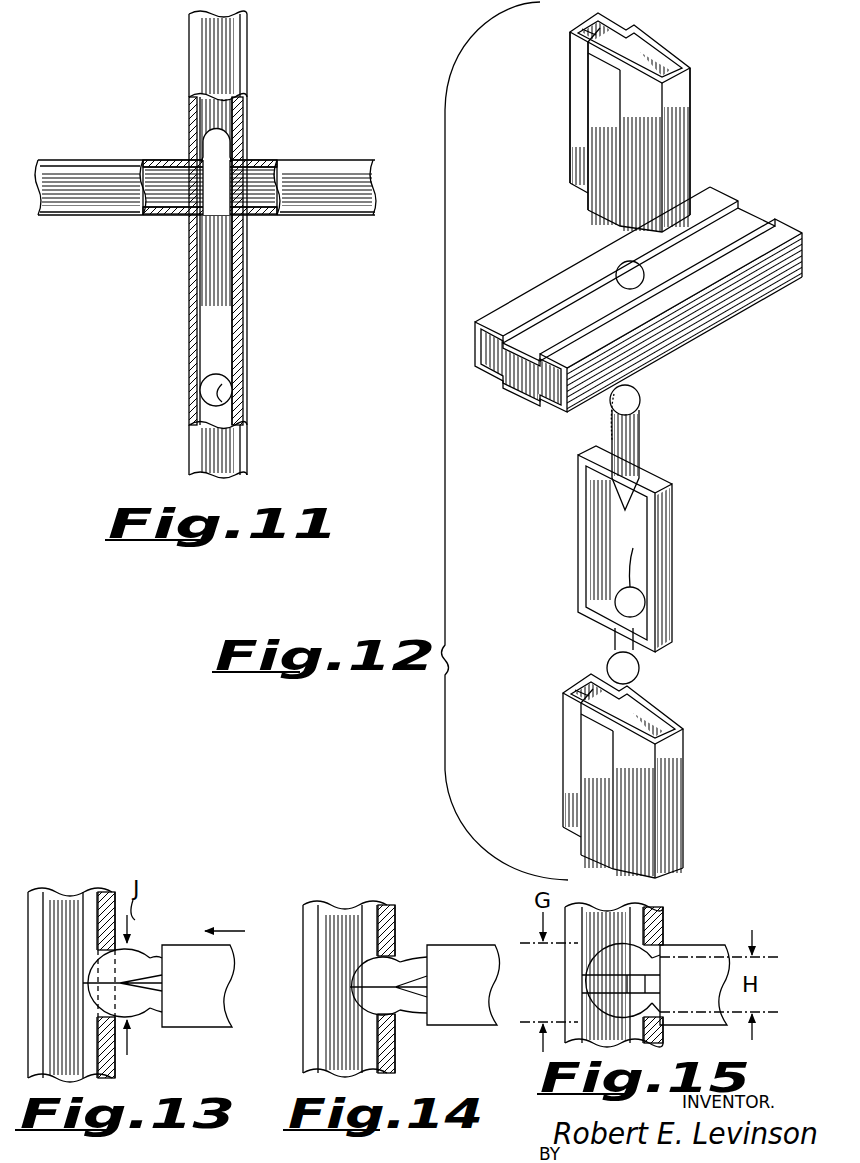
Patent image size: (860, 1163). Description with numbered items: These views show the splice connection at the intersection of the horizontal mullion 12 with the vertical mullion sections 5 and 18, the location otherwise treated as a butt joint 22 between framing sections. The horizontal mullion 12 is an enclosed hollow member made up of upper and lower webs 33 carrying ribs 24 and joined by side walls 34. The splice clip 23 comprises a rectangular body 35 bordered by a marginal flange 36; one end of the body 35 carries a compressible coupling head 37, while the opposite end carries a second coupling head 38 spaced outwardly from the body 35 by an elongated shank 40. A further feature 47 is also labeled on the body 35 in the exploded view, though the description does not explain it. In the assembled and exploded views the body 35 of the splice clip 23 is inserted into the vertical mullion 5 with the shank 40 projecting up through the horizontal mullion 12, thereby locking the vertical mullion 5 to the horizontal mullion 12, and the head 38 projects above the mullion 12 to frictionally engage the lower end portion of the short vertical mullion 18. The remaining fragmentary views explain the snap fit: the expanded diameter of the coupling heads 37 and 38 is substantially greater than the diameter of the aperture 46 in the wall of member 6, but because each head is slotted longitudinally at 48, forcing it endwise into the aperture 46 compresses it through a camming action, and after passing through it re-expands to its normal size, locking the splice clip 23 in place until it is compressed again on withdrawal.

In FIG. 11, the vertical mullion 5 is at (248, 374).
In FIG. 12, the vertical mullion 5 is at (680, 823).
In FIG. 13, the vertical mullion 6 is at (46, 892).
In FIG. 14, the vertical mullion 6 is at (338, 904).
In FIG. 15, the vertical mullion 6 is at (616, 917).
In FIG. 11, the horizontal mullion 12 is at (75, 166).
In FIG. 12, the horizontal mullion 12 is at (736, 306).
In FIG. 11, the short vertical mullion 18 is at (250, 40).
In FIG. 12, the short vertical mullion 18 is at (684, 118).
In FIG. 11, the butt joint 22 is at (191, 222).
In FIG. 11, the splice clip 23 is at (214, 298).
In FIG. 12, the splice clip 23 is at (672, 557).
In FIG. 13, the splice clip 23 is at (212, 970).
In FIG. 14, the splice clip 23 is at (476, 946).
In FIG. 15, the splice clip 23 is at (720, 944).
In FIG. 11, the rib 24 is at (247, 68).
In FIG. 12, the rib 24 is at (658, 35).
In FIG. 11, the web 33 is at (312, 215).
In FIG. 12, the web 33 is at (577, 58).
In FIG. 11, the side wall 34 is at (104, 183).
In FIG. 12, the side wall 34 is at (582, 28).
In FIG. 12, the rectangular body 35 is at (604, 500).
In FIG. 11, the marginal flange 36 is at (210, 322).
In FIG. 12, the marginal flange 36 is at (653, 589).
In FIG. 11, the compressible coupling head 37 is at (225, 394).
In FIG. 12, the compressible coupling head 37 is at (632, 670).
In FIG. 13, the compressible coupling head 37 is at (130, 968).
In FIG. 14, the compressible coupling head 37 is at (390, 968).
In FIG. 15, the compressible coupling head 37 is at (607, 960).
In FIG. 11, the second coupling head 38 is at (218, 143).
In FIG. 12, the second coupling head 38 is at (633, 404).
In FIG. 11, the elongated shank 40 is at (232, 185).
In FIG. 12, the elongated shank 40 is at (636, 450).
In FIG. 13, the aperture 46 is at (108, 943).
In FIG. 14, the aperture 46 is at (396, 1048).
In FIG. 15, the aperture 46 is at (652, 942).
In FIG. 12, the hole 47 is at (632, 571).
In FIG. 12, the slot 48 is at (636, 413).
In FIG. 13, the slot 48 is at (152, 988).
In FIG. 14, the slot 48 is at (428, 988).
In FIG. 15, the slot 48 is at (606, 988).